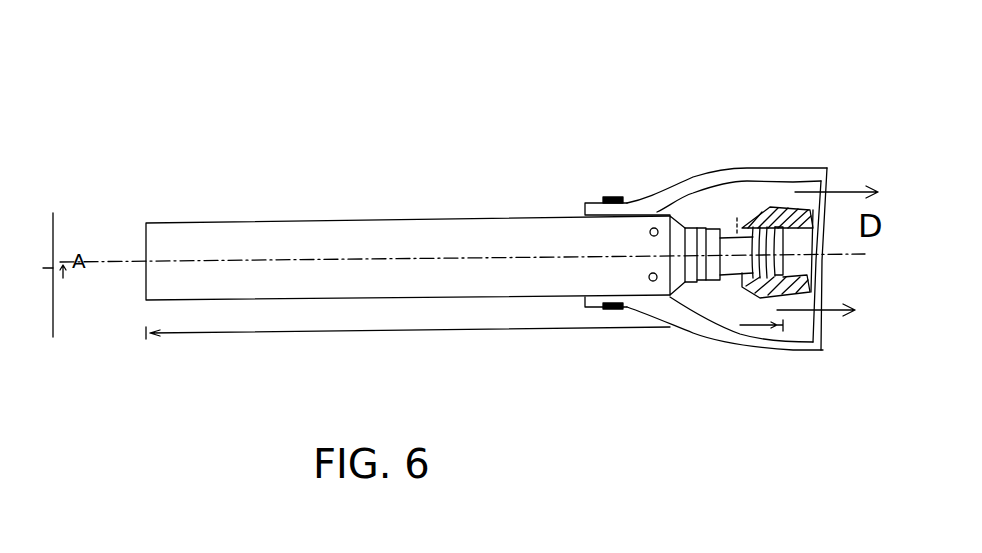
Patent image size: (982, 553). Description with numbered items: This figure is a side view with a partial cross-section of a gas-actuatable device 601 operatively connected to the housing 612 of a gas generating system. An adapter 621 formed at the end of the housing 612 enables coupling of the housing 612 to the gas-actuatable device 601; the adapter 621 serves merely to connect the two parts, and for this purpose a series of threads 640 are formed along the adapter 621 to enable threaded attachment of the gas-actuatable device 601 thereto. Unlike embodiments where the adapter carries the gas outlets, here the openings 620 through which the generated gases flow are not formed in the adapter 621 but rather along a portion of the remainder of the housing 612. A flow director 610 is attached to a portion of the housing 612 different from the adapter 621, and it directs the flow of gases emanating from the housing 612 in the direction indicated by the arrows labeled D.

The gas generating system housing 612 is at (330, 220).
The flow director 610 is at (782, 150).
The gas-actuatable device 601 is at (750, 198).
The openings 620 is at (645, 278).
The adapter 621 is at (716, 306).
The threads 640 is at (768, 232).